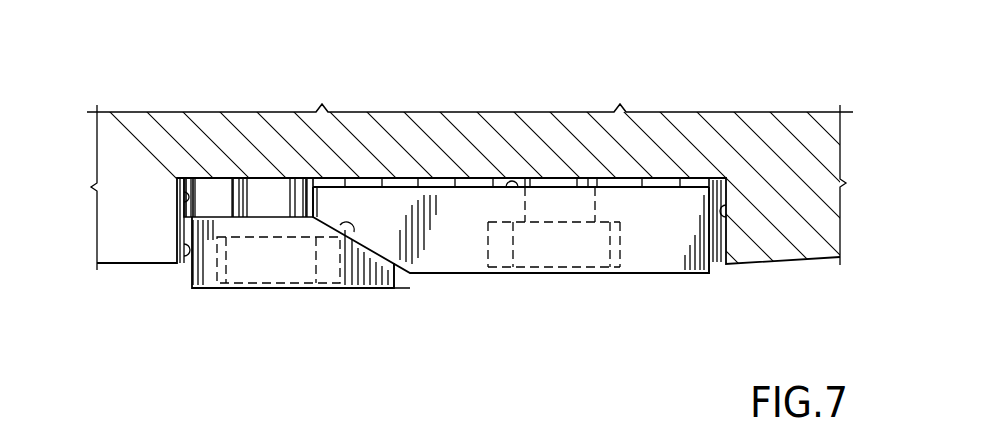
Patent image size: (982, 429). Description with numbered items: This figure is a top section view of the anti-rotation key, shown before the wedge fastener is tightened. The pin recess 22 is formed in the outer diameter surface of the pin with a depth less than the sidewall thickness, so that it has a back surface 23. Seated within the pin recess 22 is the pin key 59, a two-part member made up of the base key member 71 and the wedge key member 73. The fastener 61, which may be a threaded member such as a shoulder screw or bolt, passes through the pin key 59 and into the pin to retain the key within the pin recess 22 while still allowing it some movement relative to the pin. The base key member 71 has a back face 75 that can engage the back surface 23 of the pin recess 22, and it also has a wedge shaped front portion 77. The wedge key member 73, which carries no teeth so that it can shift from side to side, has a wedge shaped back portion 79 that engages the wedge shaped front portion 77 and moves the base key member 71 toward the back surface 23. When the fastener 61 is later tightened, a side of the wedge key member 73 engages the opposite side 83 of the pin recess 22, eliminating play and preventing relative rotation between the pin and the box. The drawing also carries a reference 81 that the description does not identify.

The pin recess 22 is at (177, 185).
The back surface 23 is at (512, 180).
The pin key 59 is at (660, 200).
The fastener 61 is at (277, 193).
The base key member 71 is at (652, 250).
The wedge key member 73 is at (272, 262).
The back face 75 is at (437, 180).
The wedge shaped front portion 77 is at (380, 290).
The wedge shaped back portion 79 is at (362, 240).
The engaging portion 81 is at (730, 223).
The opposite side 83 is at (180, 263).